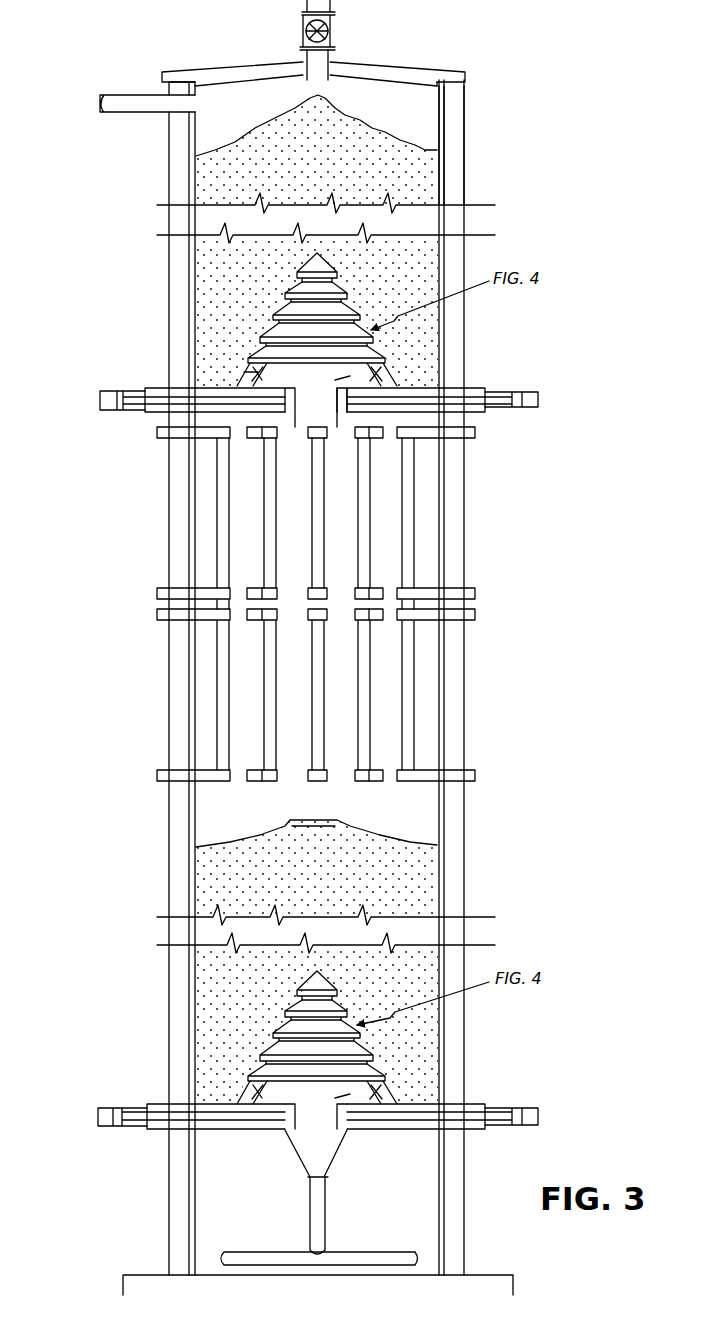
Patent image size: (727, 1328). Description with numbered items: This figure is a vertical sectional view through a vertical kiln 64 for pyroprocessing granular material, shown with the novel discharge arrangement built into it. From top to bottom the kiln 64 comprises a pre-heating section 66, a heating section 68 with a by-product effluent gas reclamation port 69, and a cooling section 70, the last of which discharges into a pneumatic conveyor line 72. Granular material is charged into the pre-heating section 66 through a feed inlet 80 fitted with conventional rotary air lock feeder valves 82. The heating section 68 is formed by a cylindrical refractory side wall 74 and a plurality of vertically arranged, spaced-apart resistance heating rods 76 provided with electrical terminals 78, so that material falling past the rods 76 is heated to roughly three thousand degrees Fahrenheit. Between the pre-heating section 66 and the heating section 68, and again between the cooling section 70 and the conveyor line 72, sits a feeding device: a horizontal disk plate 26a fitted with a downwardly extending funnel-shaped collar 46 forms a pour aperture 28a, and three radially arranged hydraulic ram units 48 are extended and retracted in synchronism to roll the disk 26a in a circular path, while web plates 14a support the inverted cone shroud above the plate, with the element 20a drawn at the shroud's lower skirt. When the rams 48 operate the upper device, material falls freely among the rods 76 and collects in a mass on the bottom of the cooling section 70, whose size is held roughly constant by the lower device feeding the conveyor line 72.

The web plates 14a is at (289, 422).
The pour aperture forming means 20a is at (241, 366).
The horizontal plate (disk) 26a is at (398, 372).
The pour aperture 28a is at (322, 382).
The funnel-shaped collar 46 is at (337, 414).
The hydraulic ram units 48 is at (98, 401).
The vertical kiln 64 is at (486, 144).
The pre-heating section 66 is at (466, 190).
The heating section 68 is at (168, 525).
The by-product effluent gas reclamation port 69 is at (100, 103).
The cooling section 70 is at (171, 997).
The pneumatic conveyor line 72 is at (358, 1247).
The cylindrical refractory side wall 74 is at (451, 877).
The resistance heating rods 76 is at (413, 527).
The electrical terminals 78 is at (160, 430).
The feed inlet 80 is at (331, 63).
The rotary air lock feeder valves 82 is at (334, 37).